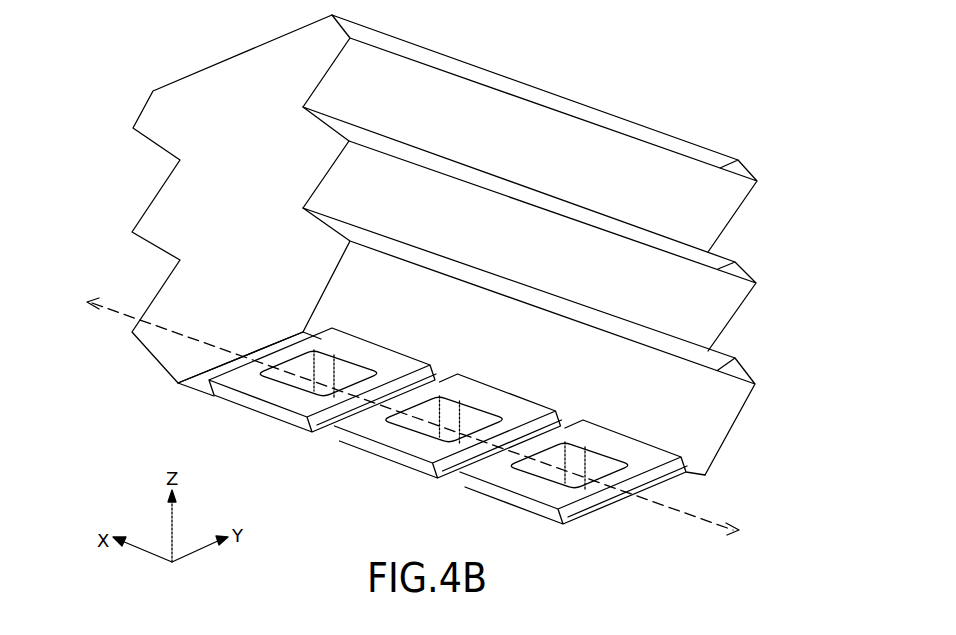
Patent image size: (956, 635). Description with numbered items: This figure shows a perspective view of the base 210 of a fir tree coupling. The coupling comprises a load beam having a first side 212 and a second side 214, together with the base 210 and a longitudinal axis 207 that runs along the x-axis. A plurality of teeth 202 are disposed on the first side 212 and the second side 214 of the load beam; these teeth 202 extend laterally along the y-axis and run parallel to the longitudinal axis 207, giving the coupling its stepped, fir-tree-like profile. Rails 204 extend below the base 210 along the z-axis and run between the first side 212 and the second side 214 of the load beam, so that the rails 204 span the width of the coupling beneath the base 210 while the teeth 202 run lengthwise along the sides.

The teeth 202 is at (738, 160).
The rails 204 is at (233, 370).
The longitudinal axis 207 is at (136, 318).
The base 210 is at (237, 324).
The first side 212 is at (158, 188).
The second side 214 is at (334, 163).